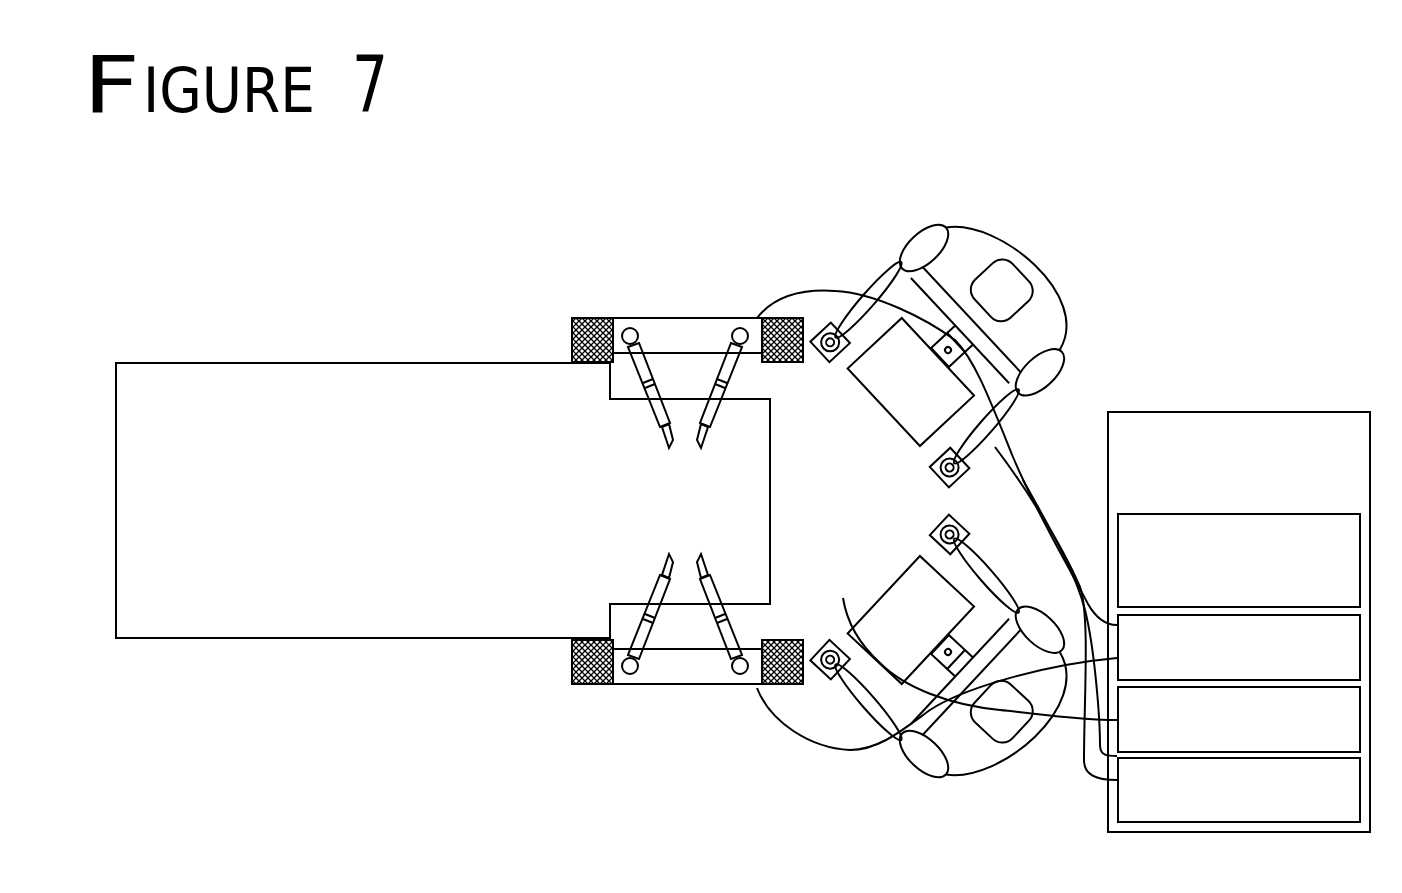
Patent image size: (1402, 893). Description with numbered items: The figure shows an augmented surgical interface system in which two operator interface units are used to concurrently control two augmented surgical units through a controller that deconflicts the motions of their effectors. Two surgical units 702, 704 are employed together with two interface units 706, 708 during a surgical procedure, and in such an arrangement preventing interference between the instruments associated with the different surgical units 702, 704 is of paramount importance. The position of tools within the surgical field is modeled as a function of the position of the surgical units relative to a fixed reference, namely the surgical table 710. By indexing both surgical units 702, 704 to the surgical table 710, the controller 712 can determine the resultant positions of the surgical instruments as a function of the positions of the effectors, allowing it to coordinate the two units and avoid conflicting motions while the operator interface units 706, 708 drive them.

The surgical unit 702 is at (680, 672).
The surgical unit 704 is at (693, 338).
The interface unit 706 is at (908, 262).
The interface unit 708 is at (900, 745).
The surgical table 710 is at (460, 620).
The controller 712 is at (1170, 418).